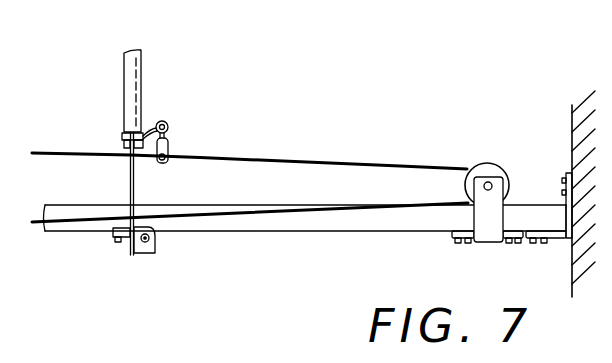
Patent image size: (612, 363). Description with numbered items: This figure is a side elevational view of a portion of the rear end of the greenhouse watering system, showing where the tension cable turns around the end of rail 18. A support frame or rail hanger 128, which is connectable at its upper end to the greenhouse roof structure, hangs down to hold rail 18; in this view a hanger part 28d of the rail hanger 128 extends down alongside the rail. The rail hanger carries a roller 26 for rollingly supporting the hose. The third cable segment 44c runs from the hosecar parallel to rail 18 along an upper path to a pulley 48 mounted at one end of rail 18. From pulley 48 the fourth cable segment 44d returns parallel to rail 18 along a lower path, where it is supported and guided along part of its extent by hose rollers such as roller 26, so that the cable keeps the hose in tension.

The support frame or rail hanger 128 is at (106, 80).
The rod 28d is at (130, 181).
The third cable segment 44c is at (281, 158).
The fourth cable segment 44d is at (198, 212).
The rail 18 is at (270, 227).
The roller 26 is at (155, 237).
The pulley 48 is at (490, 168).